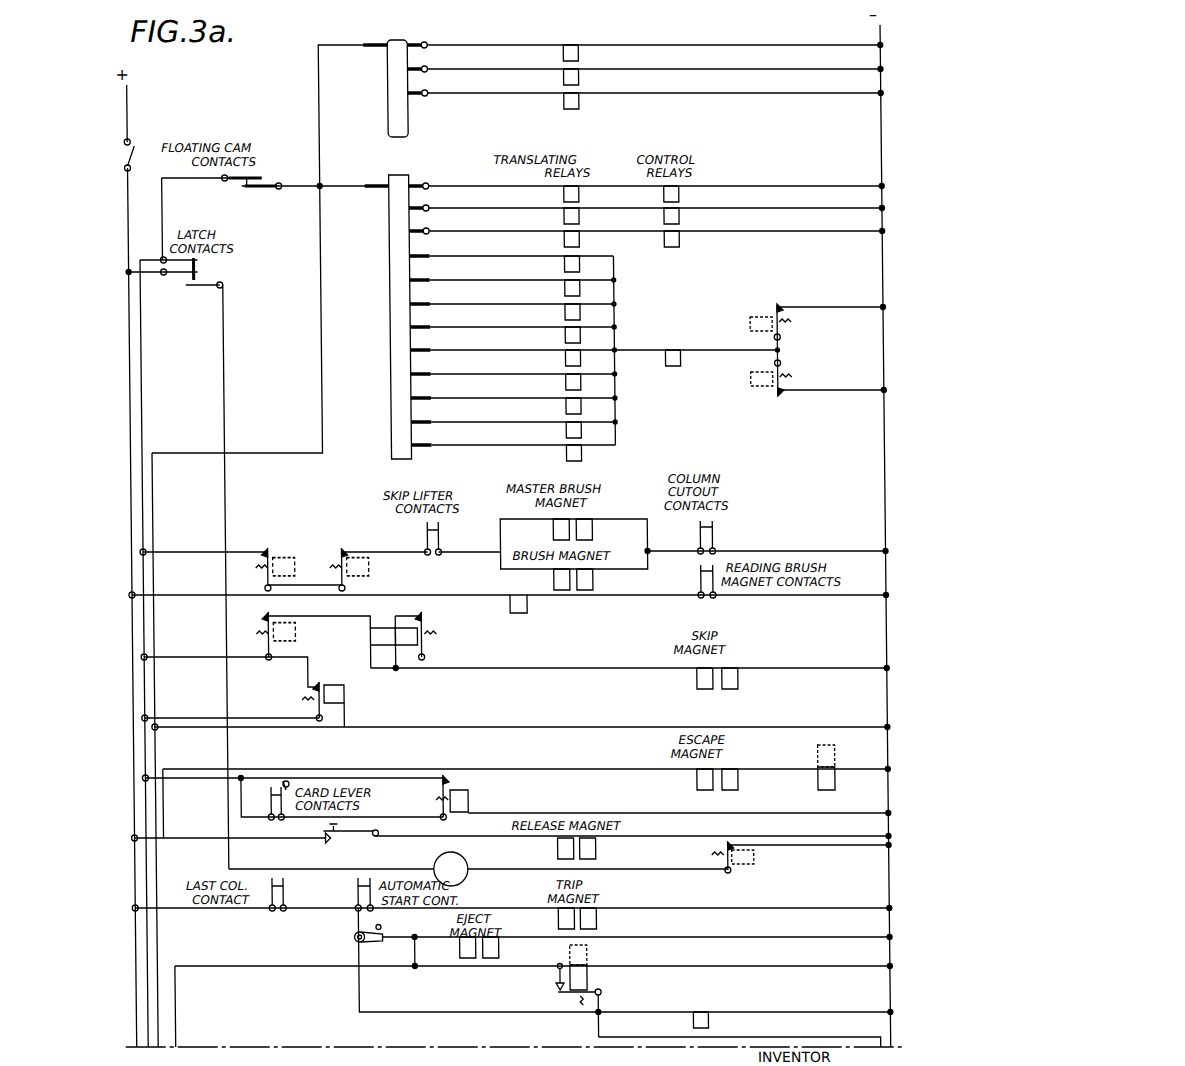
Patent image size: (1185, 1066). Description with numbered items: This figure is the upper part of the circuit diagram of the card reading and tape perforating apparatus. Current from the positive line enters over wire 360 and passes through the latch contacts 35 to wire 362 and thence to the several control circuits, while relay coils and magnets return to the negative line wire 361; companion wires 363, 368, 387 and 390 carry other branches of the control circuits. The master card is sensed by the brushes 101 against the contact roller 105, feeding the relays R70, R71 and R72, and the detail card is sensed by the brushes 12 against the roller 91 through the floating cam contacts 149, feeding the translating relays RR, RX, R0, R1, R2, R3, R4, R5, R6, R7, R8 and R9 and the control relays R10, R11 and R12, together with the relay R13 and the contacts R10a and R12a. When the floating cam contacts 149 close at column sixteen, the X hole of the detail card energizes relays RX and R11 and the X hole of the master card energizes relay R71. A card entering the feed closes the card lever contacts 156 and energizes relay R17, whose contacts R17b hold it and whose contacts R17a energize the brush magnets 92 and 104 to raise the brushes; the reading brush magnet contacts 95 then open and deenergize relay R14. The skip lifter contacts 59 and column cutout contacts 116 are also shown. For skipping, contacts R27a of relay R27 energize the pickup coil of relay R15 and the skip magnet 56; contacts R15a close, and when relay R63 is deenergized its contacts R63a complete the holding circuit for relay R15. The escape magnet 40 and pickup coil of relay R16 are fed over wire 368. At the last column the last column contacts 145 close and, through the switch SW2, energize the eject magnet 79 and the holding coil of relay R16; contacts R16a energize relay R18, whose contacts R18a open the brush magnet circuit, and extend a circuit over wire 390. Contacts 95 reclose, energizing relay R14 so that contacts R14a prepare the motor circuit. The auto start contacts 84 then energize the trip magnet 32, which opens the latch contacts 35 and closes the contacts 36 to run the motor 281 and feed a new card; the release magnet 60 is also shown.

The brushes 101 is at (434, 88).
The contact roller 105 is at (388, 120).
The brushes 12 is at (440, 231).
The floating cam contacts 149 is at (246, 188).
The latch contacts 35 is at (208, 266).
The contacts 36 is at (190, 284).
The wire 360 is at (131, 340).
The wire 362 is at (142, 372).
The conductor 363 is at (323, 342).
The roller 91 is at (392, 287).
The negative line wire 361 is at (885, 134).
The relay R70 is at (583, 53).
The relay R71 is at (583, 77).
The relay R72 is at (583, 101).
The translating relay RR is at (565, 195).
The relay RX is at (565, 218).
The translating relay R0 is at (565, 241).
The translating relay R1 is at (565, 265).
The translating relay R2 is at (565, 289).
The translating relay R3 is at (565, 313).
The translating relay R4 is at (565, 336).
The translating relay R5 is at (565, 359).
The translating relay R6 is at (565, 383).
The translating relay R7 is at (565, 407).
The translating relay R8 is at (565, 431).
The translating relay R9 is at (565, 454).
The control relay R10 is at (682, 194).
The relay R11 is at (682, 217).
The control relay R12 is at (682, 240).
The relay contact R10a is at (781, 306).
The relay contact R12a is at (781, 393).
The relay R13 is at (673, 366).
The skip lifter contacts 59 is at (440, 524).
The brush magnet 104 is at (592, 530).
The brush magnet 92 is at (592, 580).
The column cutout contacts 116 is at (714, 522).
The reading brush magnet contacts 95 is at (698, 568).
The contacts R18a is at (266, 546).
The relay R18 is at (288, 563).
The contacts R17a is at (352, 535).
The relay R17 is at (370, 569).
The contacts R27a is at (270, 614).
The relay R27 is at (298, 636).
The relay R15 is at (383, 632).
The contacts R15a is at (418, 614).
The contacts R63a is at (314, 684).
The relay R63 is at (342, 691).
The relay R14 is at (526, 604).
The skip magnet 56 is at (736, 680).
The card lever contacts 156 is at (270, 786).
The contacts R17b is at (443, 776).
The escape magnet 40 is at (694, 781).
The relay R16 is at (832, 780).
The auto start contacts 84 is at (370, 880).
The motor 281 is at (462, 858).
The release magnet 60 is at (592, 850).
The contacts R14a is at (728, 842).
The last column contacts 145 is at (281, 882).
The trip magnet 32 is at (592, 920).
The eject magnet 79 is at (455, 949).
The switch SW2 is at (368, 944).
The wire 368 is at (131, 943).
The conductor 387 is at (170, 1011).
The contacts R16a is at (551, 988).
The wire 390 is at (748, 1038).